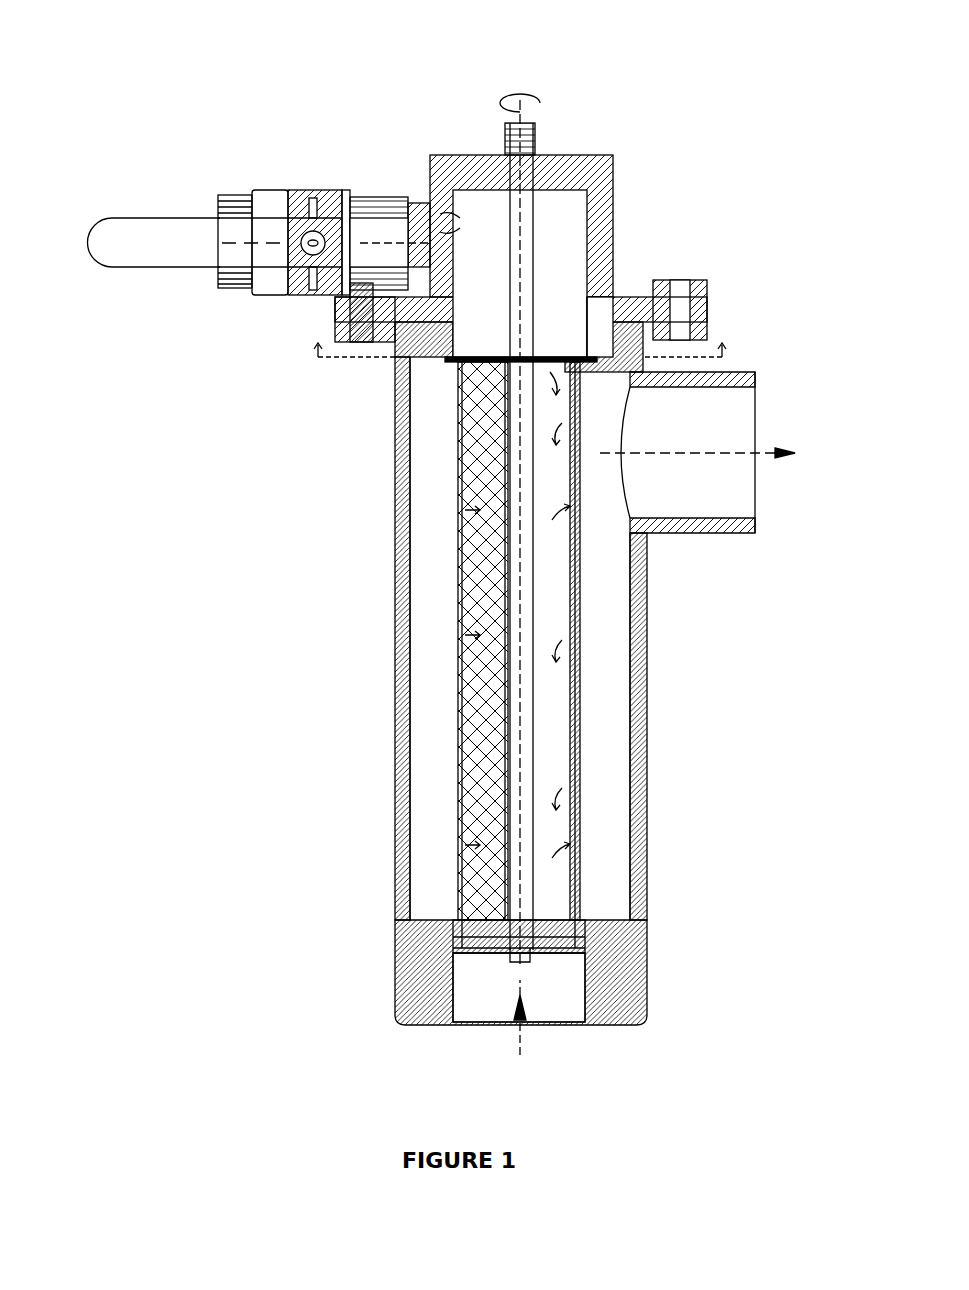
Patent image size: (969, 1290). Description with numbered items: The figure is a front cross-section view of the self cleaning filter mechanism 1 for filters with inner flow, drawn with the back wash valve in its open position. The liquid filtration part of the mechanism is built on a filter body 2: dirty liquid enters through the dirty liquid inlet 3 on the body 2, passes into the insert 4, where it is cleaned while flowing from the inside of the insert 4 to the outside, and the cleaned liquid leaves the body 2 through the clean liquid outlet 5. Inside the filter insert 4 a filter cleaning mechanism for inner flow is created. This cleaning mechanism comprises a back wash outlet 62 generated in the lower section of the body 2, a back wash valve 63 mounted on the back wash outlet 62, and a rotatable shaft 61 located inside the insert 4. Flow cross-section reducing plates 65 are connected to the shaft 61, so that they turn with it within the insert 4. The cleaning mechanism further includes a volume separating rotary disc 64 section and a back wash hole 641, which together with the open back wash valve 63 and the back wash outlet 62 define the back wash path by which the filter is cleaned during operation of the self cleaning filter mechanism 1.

The self cleaning filter mechanism 1 is at (263, 92).
The body 2 is at (617, 942).
The dirty liquid inlet 3 is at (492, 1008).
The insert 4 is at (509, 641).
The clean liquid outlet 5 is at (703, 428).
The shaft 61 is at (467, 640).
The back wash outlet 62 is at (432, 222).
The back wash valve 63 is at (282, 202).
The volume separating rotary disc 64 is at (495, 311).
The back wash hole 641 is at (565, 345).
The flow cross-section reducing plate 65 is at (577, 690).